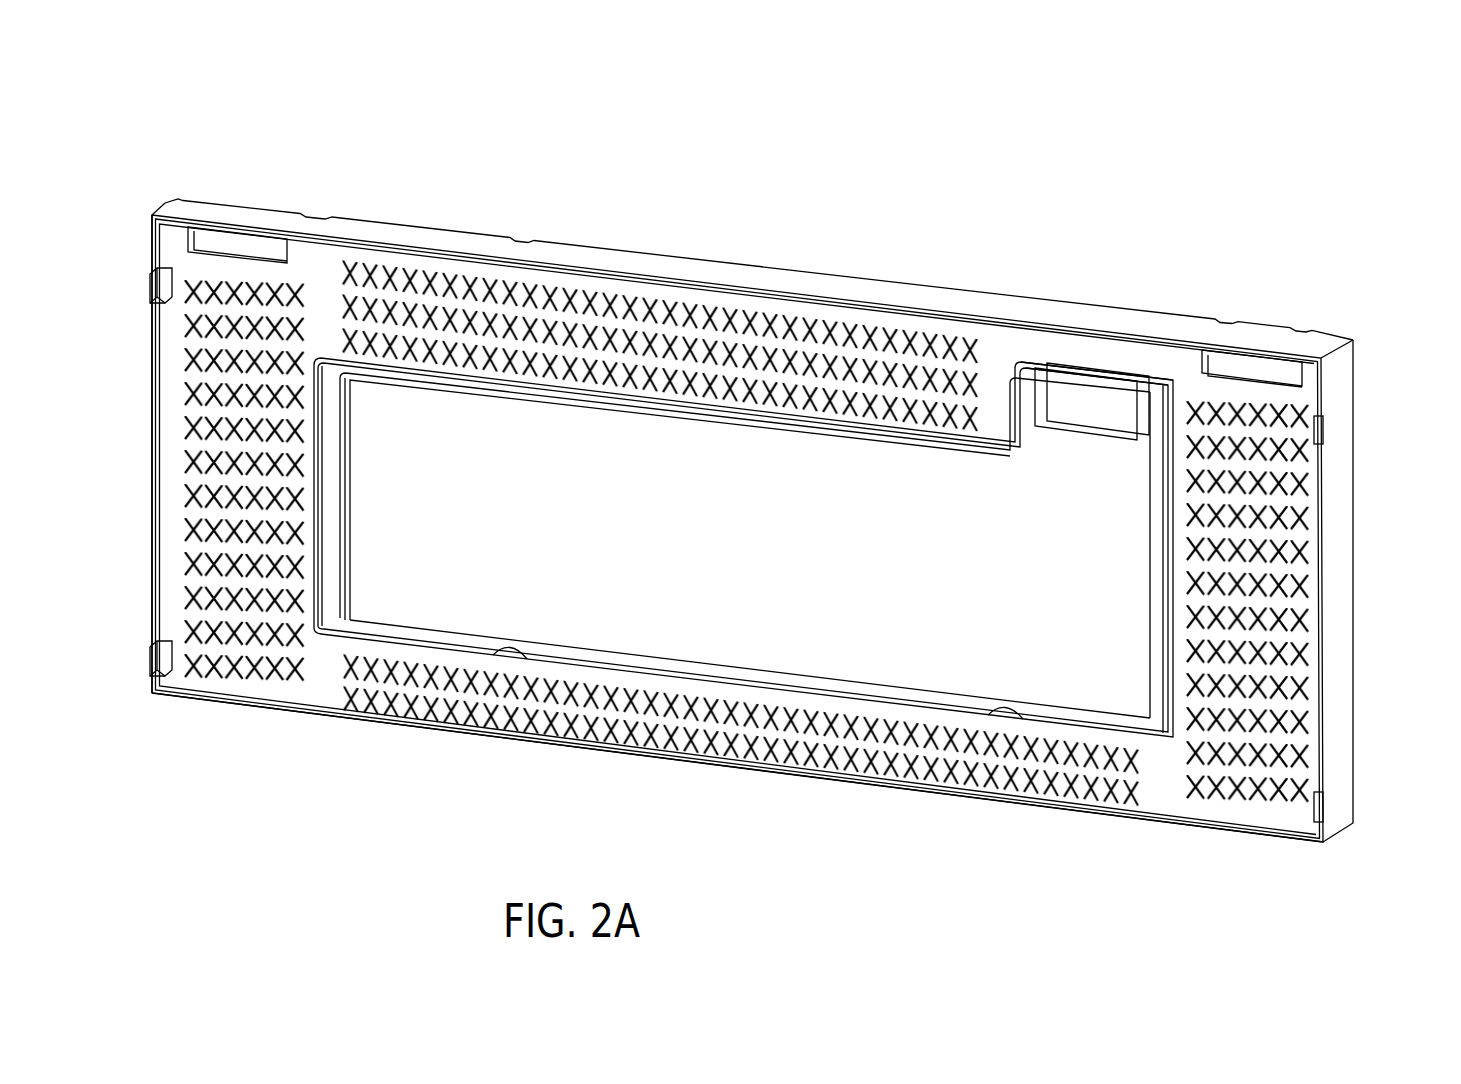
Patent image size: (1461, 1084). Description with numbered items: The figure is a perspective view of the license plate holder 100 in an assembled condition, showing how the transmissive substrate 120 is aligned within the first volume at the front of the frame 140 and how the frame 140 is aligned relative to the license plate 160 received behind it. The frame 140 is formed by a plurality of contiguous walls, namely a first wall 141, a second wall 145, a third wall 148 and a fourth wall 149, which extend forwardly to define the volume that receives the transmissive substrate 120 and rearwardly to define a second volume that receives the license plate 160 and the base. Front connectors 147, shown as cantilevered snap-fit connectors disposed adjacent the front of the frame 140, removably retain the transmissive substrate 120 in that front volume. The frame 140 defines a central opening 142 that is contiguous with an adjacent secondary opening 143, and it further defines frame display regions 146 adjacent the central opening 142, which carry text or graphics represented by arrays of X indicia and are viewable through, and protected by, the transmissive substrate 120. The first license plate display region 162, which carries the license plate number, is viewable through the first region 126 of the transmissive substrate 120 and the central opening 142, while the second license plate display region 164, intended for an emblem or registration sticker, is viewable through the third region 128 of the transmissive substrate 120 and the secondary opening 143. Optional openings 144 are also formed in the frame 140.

The license plate holder 100 is at (1273, 222).
The transmissive substrate 120 is at (1047, 440).
The first region 126 is at (407, 632).
The third region 128 is at (1070, 372).
The frame 140 is at (845, 281).
The first wall 141 is at (330, 288).
The central opening 142 is at (888, 700).
The secondary opening 143 is at (1100, 360).
The openings 144 is at (232, 243).
The second wall 145 is at (150, 490).
The frame display regions 146 is at (651, 330).
The front connectors 147 is at (150, 288).
The third wall 148 is at (527, 248).
The fourth wall 149 is at (1080, 806).
The license plate 160 is at (1157, 397).
The first license plate display region 162 is at (1150, 462).
The second license plate display region 164 is at (1142, 390).